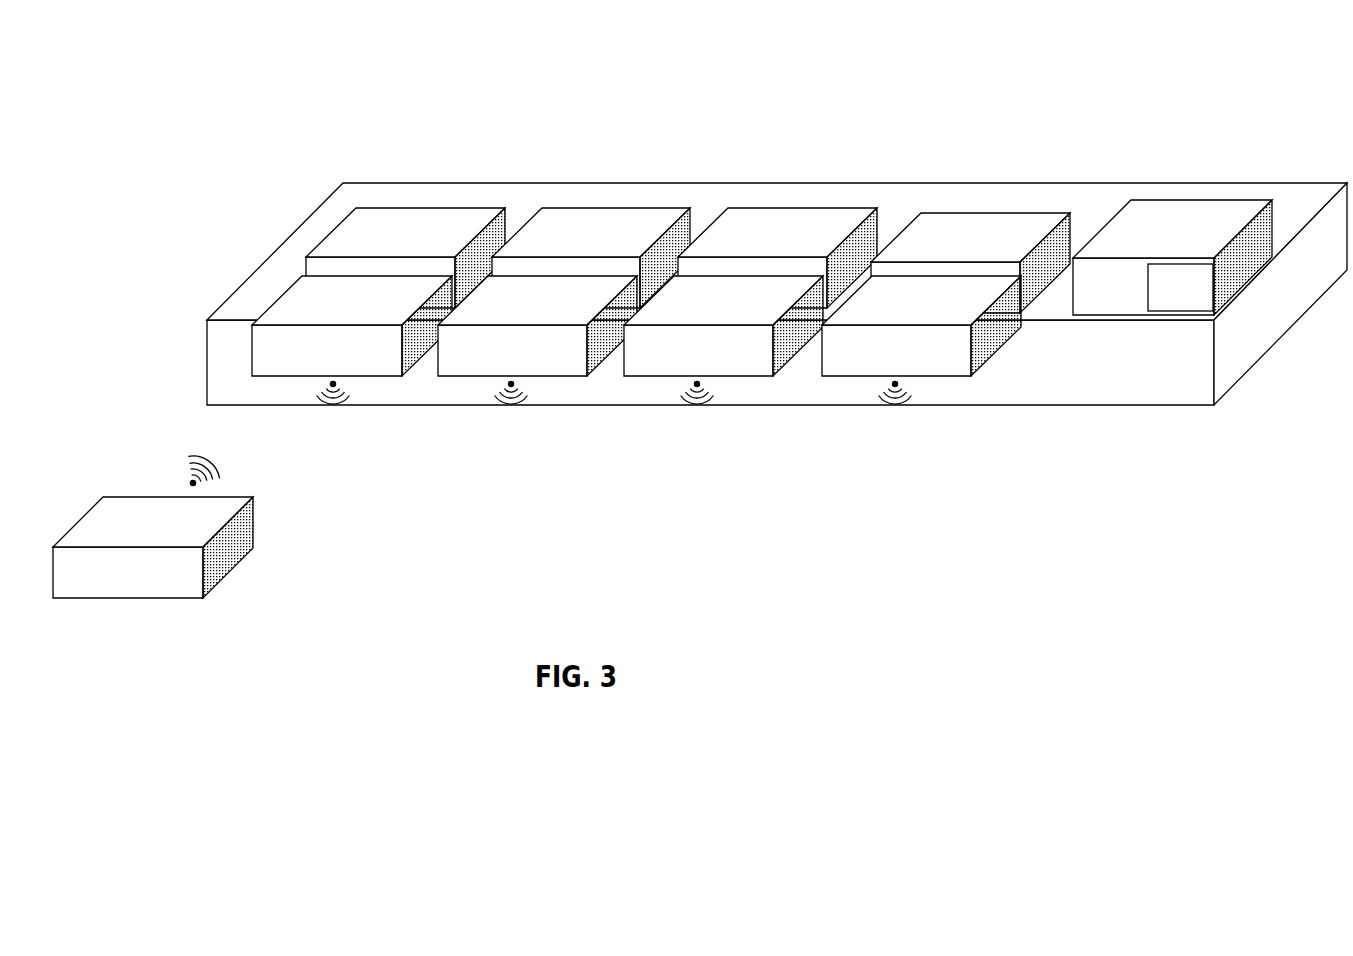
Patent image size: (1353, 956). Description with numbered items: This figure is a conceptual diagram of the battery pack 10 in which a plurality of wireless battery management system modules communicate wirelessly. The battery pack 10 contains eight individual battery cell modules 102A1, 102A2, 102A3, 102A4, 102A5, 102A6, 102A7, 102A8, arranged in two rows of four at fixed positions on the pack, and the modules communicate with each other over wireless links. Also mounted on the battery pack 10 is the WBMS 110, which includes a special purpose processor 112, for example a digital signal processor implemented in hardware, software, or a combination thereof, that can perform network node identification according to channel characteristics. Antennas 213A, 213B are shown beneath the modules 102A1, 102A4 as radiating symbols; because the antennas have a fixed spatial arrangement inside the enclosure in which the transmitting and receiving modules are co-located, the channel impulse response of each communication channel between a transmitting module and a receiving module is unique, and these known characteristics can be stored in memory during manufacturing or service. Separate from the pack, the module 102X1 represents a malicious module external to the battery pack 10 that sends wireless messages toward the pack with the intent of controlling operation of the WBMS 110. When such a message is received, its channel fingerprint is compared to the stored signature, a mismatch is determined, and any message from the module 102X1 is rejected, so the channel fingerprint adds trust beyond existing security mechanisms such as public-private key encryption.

The battery pack 10 is at (1126, 112).
The module 102A1 is at (310, 313).
The module 102A2 is at (497, 313).
The module 102A3 is at (682, 313).
The module 102A4 is at (878, 313).
The module 102A5 is at (362, 249).
The module 102A6 is at (537, 249).
The module 102A7 is at (728, 249).
The module 102A8 is at (927, 252).
The malicious module 102X1 is at (107, 541).
The WBMS 110 is at (1125, 252).
The special purpose processor 112 is at (1162, 301).
The antenna 213A is at (332, 400).
The antenna 213B is at (887, 407).